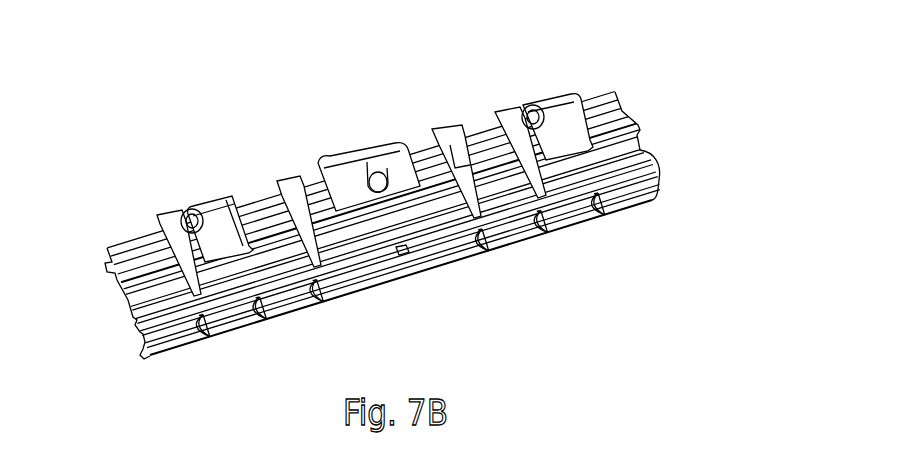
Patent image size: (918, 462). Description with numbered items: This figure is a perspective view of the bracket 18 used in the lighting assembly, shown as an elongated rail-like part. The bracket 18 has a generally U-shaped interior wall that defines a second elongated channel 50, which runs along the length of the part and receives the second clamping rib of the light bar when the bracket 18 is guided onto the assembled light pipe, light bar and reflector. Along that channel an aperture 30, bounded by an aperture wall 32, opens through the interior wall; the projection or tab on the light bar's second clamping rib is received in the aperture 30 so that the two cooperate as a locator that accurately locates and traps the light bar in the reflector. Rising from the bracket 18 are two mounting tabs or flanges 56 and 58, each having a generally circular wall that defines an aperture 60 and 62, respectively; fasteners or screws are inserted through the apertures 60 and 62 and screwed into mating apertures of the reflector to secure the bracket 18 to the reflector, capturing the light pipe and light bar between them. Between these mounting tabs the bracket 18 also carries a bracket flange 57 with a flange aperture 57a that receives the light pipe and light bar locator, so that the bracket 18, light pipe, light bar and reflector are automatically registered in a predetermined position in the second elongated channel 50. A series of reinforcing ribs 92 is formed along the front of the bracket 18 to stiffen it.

The bracket 18 is at (658, 180).
The aperture 30 is at (398, 275).
The aperture wall 32 is at (403, 252).
The second elongated channel 50 is at (127, 340).
The mounting tab or flange 56 is at (229, 197).
The bracket flange 57 is at (335, 162).
The flange aperture 57a is at (381, 148).
The mounting tab or flange 58 is at (580, 98).
The aperture 60 is at (181, 205).
The aperture 62 is at (520, 103).
The reinforcing ribs 92 is at (523, 230).